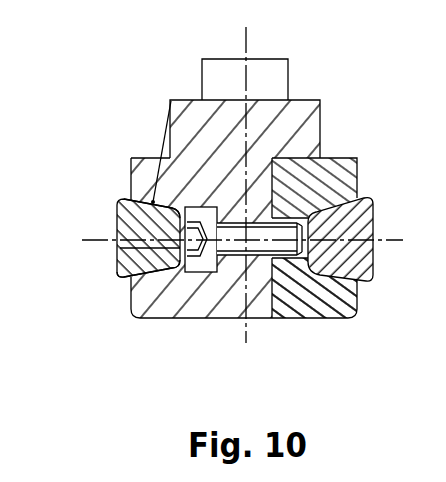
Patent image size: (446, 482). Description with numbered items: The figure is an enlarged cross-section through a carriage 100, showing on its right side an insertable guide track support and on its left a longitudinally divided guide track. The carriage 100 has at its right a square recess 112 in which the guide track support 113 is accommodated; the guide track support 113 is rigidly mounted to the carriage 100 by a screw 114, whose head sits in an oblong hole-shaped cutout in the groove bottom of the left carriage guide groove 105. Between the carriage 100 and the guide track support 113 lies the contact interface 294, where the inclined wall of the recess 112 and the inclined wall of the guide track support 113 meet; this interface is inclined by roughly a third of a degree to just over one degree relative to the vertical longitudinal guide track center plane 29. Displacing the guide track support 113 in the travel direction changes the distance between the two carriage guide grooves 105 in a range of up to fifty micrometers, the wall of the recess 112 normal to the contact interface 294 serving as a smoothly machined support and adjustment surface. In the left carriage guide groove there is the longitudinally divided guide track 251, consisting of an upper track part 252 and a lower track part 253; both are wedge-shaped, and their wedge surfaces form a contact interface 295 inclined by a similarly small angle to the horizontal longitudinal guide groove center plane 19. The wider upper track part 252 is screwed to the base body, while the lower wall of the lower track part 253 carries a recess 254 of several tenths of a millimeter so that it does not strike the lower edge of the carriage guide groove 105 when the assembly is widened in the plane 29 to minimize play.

The vertical longitudinal guide track center plane 29 is at (246, 50).
The carriage 100 is at (278, 137).
The carriage guide groove 105 is at (160, 158).
The square recess 112 is at (272, 192).
The guide track support 113 is at (293, 290).
The screw 114 is at (208, 265).
The contact interface 294 is at (270, 278).
The horizontal longitudinal guide groove center plane 19 is at (385, 239).
The longitudinally divided guide track 251 is at (116, 226).
The upper track part 252 is at (132, 210).
The lower track part 253 is at (128, 265).
The recess 254 is at (128, 277).
The contact interface 295 is at (134, 248).